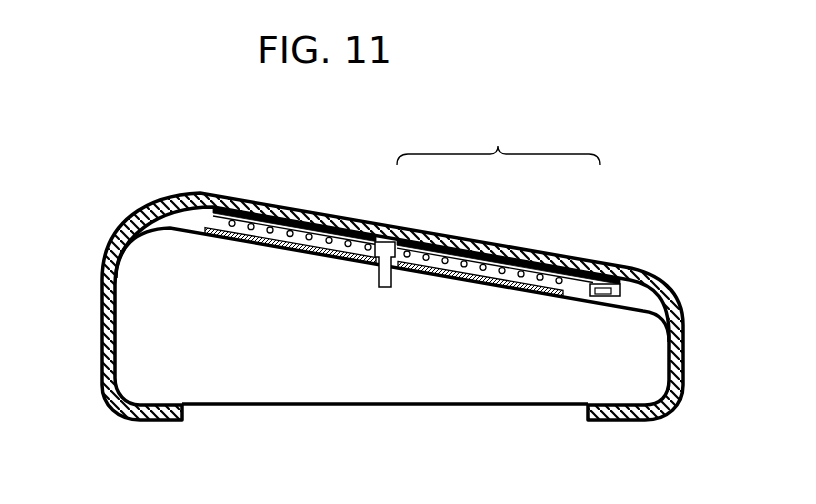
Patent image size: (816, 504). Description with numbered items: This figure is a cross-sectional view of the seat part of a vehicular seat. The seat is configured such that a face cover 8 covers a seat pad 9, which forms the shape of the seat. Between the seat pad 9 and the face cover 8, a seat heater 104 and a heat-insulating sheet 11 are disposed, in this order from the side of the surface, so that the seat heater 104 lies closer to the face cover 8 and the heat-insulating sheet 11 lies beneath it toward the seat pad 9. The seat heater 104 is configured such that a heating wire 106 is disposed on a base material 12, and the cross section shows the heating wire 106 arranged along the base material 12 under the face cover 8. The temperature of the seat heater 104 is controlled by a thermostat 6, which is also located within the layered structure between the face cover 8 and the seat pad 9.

The thermostat 6 is at (596, 277).
The face cover 8 is at (283, 206).
The seat pad 9 is at (228, 362).
The heat-insulating sheet 11 is at (317, 250).
The base material 12 is at (515, 245).
The seat heater 104 is at (498, 137).
The heating wire 106 is at (462, 262).